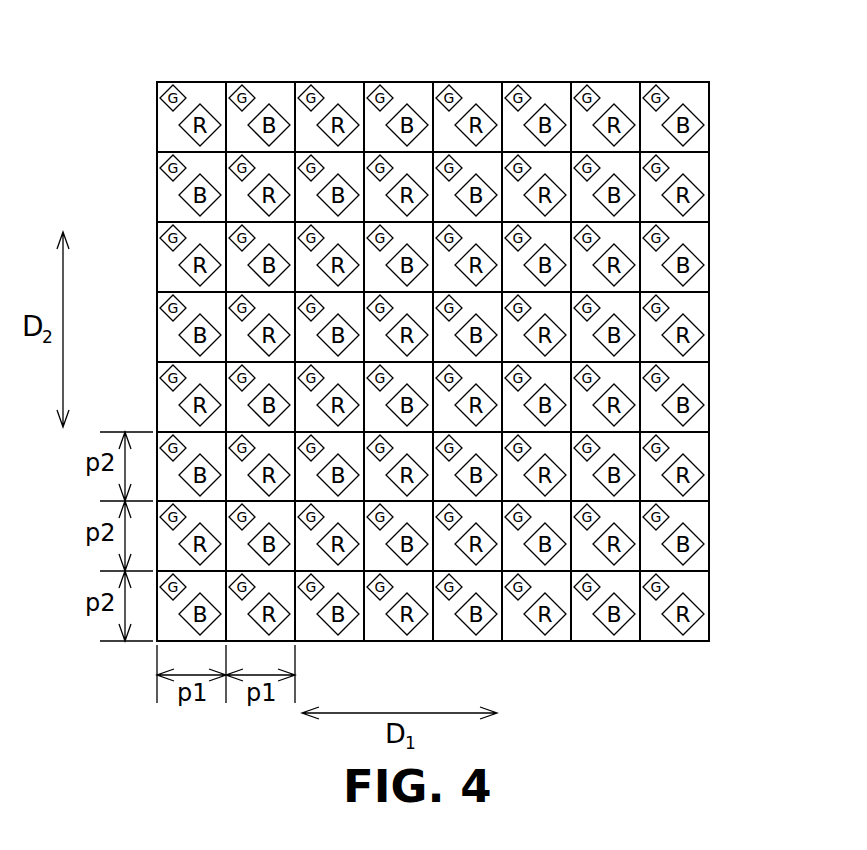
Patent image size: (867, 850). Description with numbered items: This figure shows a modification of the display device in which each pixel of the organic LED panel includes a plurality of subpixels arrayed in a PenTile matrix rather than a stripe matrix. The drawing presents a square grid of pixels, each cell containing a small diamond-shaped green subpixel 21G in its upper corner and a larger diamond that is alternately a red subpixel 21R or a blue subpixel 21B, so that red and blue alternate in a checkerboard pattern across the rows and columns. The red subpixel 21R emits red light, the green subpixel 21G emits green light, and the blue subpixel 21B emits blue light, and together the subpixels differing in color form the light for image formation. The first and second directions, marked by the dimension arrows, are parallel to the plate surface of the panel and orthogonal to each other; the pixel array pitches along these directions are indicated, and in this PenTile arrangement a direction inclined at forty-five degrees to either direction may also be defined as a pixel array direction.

The subpixel 21G is at (184, 92).
The subpixel 21R is at (210, 107).
The subpixel 21B is at (280, 107).